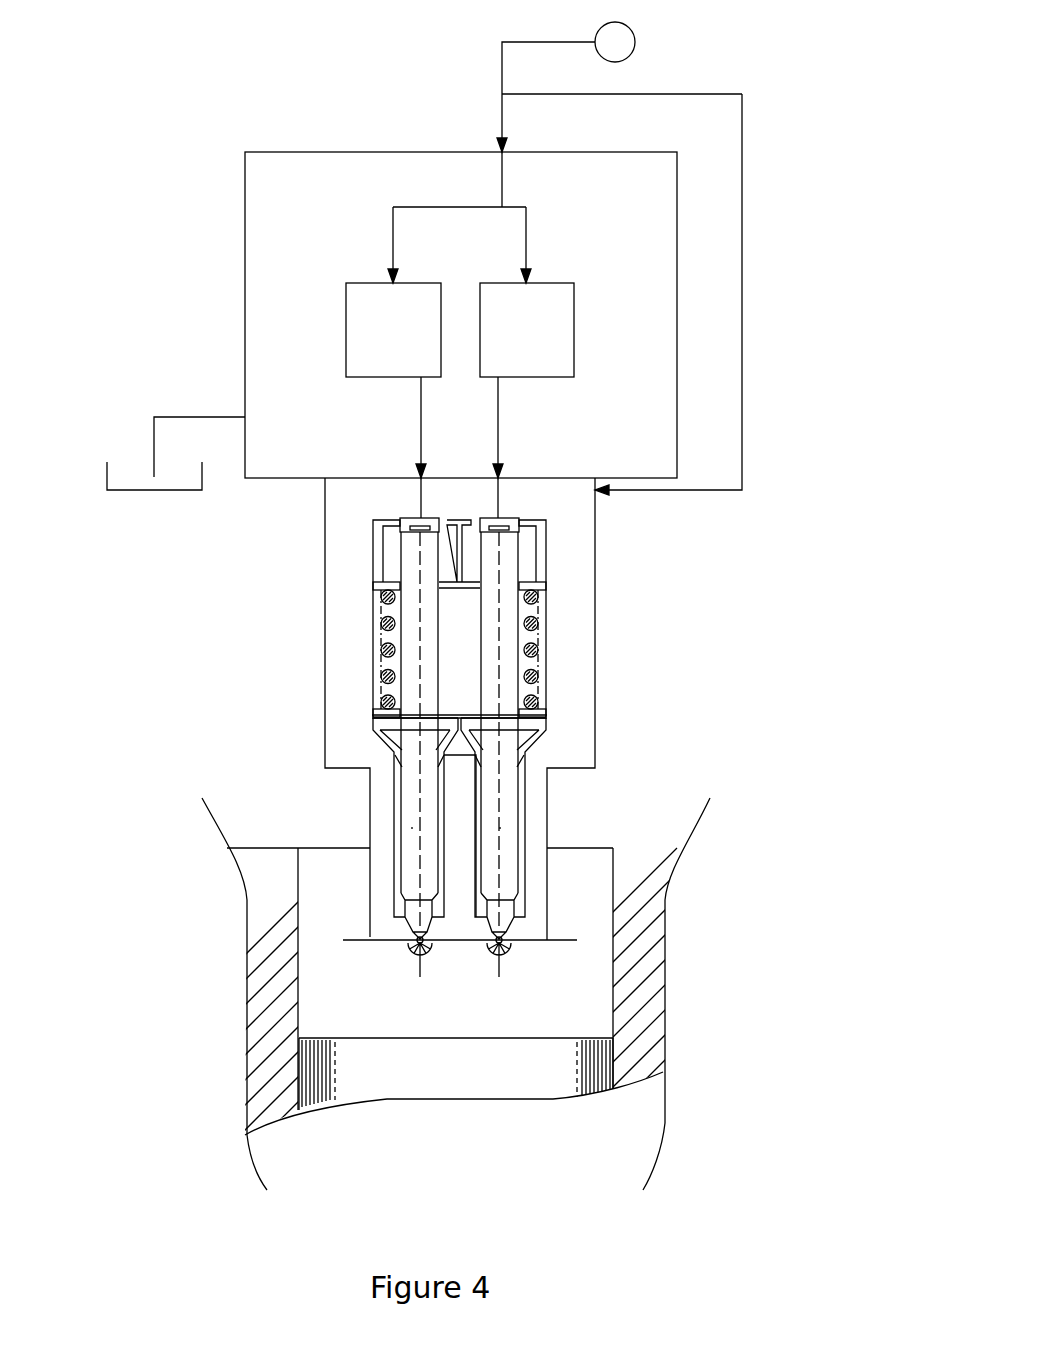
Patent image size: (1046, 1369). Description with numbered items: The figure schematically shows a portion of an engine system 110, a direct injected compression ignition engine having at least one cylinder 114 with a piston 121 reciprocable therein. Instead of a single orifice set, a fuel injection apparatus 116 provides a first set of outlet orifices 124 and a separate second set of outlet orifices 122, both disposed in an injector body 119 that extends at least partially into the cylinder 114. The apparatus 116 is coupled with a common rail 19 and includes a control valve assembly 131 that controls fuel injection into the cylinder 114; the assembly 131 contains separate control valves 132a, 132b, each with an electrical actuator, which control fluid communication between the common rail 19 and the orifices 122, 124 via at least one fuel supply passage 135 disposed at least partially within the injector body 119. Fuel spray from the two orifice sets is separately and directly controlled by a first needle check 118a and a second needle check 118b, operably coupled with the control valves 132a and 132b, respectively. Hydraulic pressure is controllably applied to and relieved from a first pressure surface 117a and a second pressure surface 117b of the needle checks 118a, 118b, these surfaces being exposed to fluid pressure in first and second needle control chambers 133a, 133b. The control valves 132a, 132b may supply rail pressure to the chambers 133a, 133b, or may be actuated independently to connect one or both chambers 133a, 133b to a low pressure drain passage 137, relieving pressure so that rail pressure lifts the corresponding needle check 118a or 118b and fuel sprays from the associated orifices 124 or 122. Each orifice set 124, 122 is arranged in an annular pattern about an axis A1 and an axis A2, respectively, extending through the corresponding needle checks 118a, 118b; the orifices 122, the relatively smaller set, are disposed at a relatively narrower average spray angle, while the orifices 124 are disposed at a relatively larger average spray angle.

The common rail 19 is at (636, 42).
The control valve assembly 131 is at (355, 175).
The first control valve 132a is at (346, 367).
The second control valve 132b is at (574, 367).
The low pressure drain passage 137 is at (154, 436).
The fuel supply passage 135 is at (742, 416).
The first pressure surface 117a is at (405, 526).
The second pressure surface 117b is at (514, 526).
The first needle control chamber 133a is at (410, 530).
The second needle control chamber 133b is at (510, 530).
The first needle check 118a is at (410, 557).
The second needle check 118b is at (509, 557).
The injector body 119 is at (570, 607).
The fuel injection apparatus 116 is at (595, 637).
The engine system 110 is at (614, 802).
The cylinder 114 is at (322, 884).
The first axis A1 is at (413, 827).
The second axis A2 is at (499, 828).
The first set of outlet orifices 124 is at (403, 952).
The second set of outlet orifices 122 is at (514, 953).
The piston 121 is at (458, 1082).